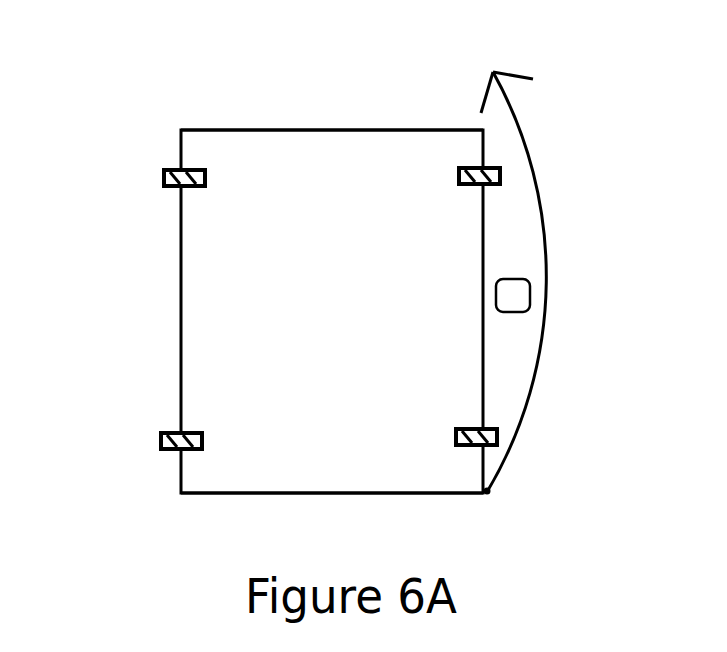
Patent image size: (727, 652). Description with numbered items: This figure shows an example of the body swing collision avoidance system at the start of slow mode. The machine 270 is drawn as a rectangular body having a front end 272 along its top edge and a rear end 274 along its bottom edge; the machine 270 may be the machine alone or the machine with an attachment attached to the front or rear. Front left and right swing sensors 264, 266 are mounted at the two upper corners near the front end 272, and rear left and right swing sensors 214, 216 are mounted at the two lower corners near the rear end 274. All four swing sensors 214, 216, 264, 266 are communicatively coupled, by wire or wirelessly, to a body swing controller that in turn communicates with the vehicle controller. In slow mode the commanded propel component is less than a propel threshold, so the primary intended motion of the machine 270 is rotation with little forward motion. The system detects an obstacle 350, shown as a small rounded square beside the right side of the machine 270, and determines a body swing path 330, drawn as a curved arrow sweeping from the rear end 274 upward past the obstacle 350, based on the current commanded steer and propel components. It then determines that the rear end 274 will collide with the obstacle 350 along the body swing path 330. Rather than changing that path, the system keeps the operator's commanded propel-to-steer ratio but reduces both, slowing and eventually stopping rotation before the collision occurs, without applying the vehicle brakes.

The machine 270 is at (130, 171).
The front end 272 is at (273, 128).
The rear end 274 is at (275, 495).
The front left swing sensor 264 is at (197, 188).
The front right swing sensor 266 is at (463, 185).
The rear left swing sensor 214 is at (180, 435).
The rear right swing sensor 216 is at (470, 428).
The body swing path 330 is at (534, 170).
The obstacle 350 is at (531, 290).